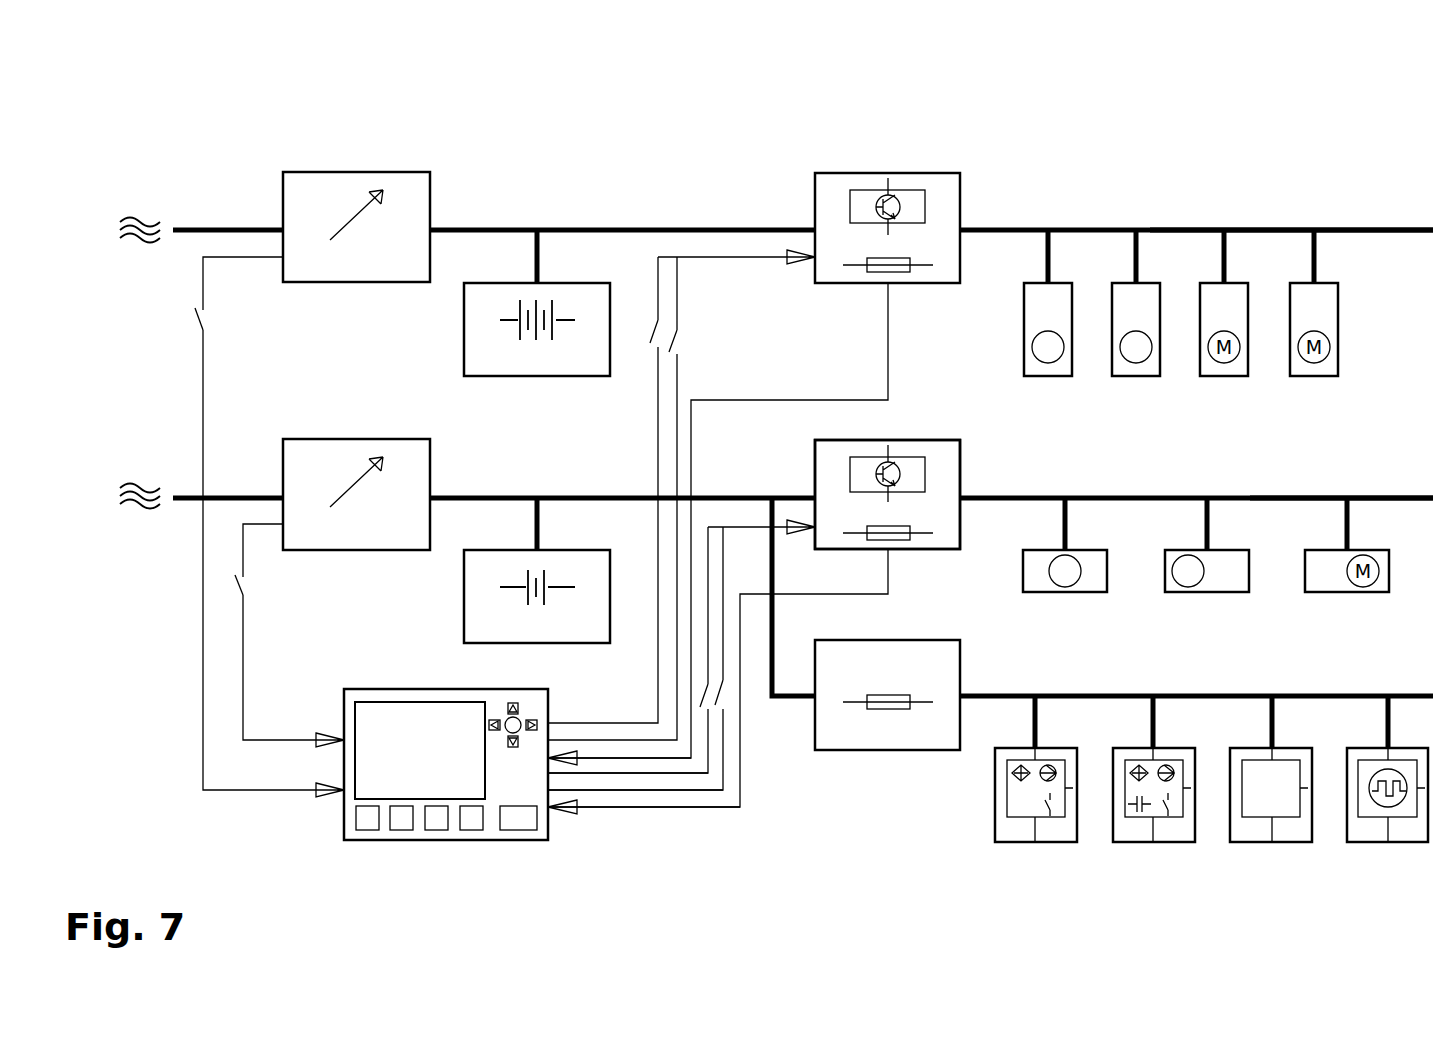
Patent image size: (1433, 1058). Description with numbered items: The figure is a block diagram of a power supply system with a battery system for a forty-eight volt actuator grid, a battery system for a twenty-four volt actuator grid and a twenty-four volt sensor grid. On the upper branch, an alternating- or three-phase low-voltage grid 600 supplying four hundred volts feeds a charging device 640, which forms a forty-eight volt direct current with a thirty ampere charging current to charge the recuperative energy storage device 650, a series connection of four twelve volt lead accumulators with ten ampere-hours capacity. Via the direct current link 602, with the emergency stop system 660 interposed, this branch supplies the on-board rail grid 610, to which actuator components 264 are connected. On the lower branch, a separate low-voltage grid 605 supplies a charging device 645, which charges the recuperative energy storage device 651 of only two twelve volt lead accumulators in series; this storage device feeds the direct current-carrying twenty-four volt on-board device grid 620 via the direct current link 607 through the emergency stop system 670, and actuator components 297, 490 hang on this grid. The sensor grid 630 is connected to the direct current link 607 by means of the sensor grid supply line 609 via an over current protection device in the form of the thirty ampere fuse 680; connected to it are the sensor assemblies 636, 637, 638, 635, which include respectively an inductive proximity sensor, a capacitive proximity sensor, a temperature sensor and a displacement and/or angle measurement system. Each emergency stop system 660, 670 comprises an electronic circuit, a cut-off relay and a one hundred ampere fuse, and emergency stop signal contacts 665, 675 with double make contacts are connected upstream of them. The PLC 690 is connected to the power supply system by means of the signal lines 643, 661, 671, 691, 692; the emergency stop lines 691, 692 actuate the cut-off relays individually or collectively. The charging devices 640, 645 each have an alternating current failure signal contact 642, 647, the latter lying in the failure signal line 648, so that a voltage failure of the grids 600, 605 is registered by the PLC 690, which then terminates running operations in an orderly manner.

The alternating- or three-phase low-voltage grid 600 is at (145, 190).
The alternating- or three-phase low-voltage grid 605 is at (140, 505).
The charging device 640 is at (353, 172).
The charging device 645 is at (283, 460).
The direct current link 602 is at (640, 230).
The direct current link 607 is at (490, 498).
The on-board rail grid 610 is at (1240, 230).
The on-board device grid 620 is at (1367, 498).
The sensor grid supply line 609 is at (790, 696).
The sensor grid 630 is at (985, 697).
The recuperative energy storage device 650 is at (510, 283).
The recuperative energy storage device 651 is at (464, 598).
The emergency stop system 660 is at (870, 173).
The emergency stop system 670 is at (918, 440).
The emergency stop signal contact 665 is at (677, 330).
The signal line 661 is at (677, 388).
The emergency stop signal contact 675 is at (723, 680).
The alternating current failure signal contact 642 is at (201, 330).
The signal line 643 is at (203, 697).
The alternating current failure signal contact 647 is at (241, 594).
The failure signal line 648 is at (242, 723).
The PLC 690 is at (441, 840).
The emergency stop line 691 is at (617, 758).
The signal line 671 is at (639, 790).
The emergency stop line 692 is at (700, 807).
The actuator component 264 is at (1125, 293).
The actuator component 297 is at (1093, 560).
The actuator component 490 is at (1215, 562).
The 30 A fuse 680 is at (888, 750).
The sensor assembly 636 is at (1041, 842).
The sensor assembly 637 is at (1153, 842).
The sensor assembly 638 is at (1270, 842).
The sensor assembly 635 is at (1385, 842).